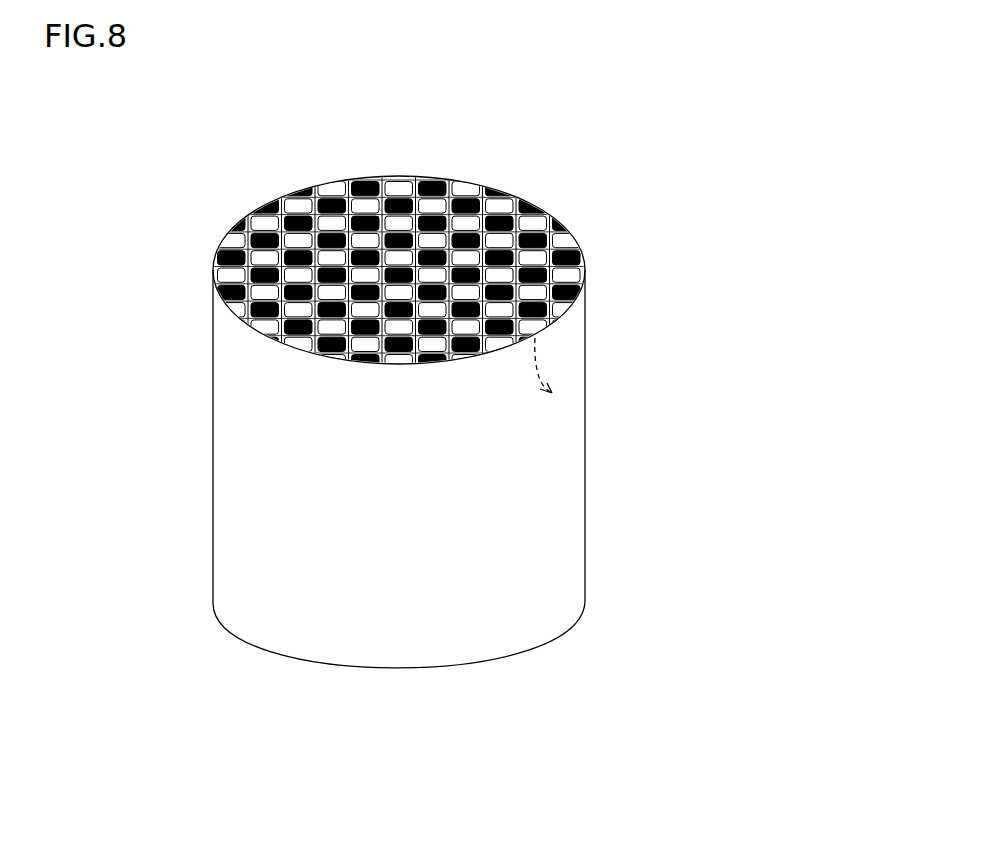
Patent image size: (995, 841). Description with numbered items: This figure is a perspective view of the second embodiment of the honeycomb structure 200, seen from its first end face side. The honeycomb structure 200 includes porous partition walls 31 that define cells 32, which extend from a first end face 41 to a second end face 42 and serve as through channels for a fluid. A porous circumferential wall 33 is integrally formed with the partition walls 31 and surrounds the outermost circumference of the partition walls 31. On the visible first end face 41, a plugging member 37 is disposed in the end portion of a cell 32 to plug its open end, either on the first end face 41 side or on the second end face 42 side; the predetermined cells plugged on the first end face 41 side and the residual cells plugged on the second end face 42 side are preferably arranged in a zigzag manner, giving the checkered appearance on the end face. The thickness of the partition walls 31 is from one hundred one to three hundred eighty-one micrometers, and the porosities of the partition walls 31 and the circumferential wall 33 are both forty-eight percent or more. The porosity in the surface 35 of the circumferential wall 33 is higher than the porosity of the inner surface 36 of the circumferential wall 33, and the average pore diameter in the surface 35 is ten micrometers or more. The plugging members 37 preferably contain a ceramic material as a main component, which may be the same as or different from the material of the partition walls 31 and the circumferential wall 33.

The honeycomb structure 200 is at (647, 76).
The partition walls 31 is at (385, 180).
The cells 32 is at (437, 206).
The circumferential wall 33 is at (587, 340).
The surface of the circumferential wall 35 is at (565, 392).
The inner surface of the circumferential wall 36 is at (568, 274).
The plugging member 37 is at (361, 178).
The first end face 41 is at (252, 214).
The second end face 42 is at (562, 632).